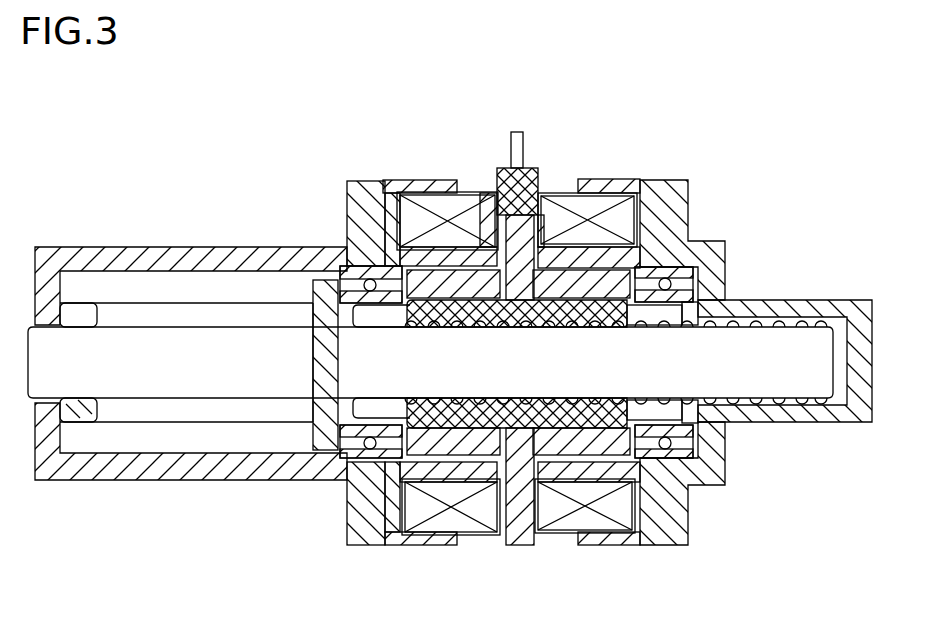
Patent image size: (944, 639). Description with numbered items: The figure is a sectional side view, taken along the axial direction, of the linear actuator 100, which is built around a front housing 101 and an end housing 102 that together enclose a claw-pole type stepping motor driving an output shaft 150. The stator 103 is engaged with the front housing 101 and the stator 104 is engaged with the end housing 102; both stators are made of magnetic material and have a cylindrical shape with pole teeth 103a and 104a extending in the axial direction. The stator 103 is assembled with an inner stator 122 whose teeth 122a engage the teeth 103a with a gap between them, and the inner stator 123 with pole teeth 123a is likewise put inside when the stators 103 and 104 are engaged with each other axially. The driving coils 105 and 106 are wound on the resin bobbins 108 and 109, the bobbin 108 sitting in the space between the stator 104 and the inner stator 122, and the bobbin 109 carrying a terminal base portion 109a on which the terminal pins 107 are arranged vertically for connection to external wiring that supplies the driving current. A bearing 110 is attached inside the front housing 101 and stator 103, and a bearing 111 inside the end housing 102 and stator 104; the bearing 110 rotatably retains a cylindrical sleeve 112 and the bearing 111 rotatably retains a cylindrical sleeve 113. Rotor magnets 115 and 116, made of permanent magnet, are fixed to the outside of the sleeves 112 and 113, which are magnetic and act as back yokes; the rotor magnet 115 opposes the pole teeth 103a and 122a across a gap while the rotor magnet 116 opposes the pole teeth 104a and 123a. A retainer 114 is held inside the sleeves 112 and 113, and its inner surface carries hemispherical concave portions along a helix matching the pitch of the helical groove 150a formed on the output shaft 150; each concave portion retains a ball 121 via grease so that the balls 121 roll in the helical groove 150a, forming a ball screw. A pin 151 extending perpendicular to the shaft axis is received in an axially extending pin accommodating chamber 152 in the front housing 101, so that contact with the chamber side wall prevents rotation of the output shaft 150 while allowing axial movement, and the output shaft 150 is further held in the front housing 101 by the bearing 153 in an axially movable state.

The linear actuator 100 is at (706, 152).
The front housing 101 is at (112, 256).
The end housing 102 is at (808, 302).
The stator 103 is at (402, 192).
The pole teeth 103a is at (425, 212).
The stator 104 is at (598, 180).
The pole teeth 104a is at (618, 199).
The driving coil 105 is at (493, 196).
The driving coil 106 is at (568, 193).
The terminal pin 107 is at (517, 138).
The bobbin 108 is at (348, 205).
The bobbin 109 is at (688, 200).
The terminal base portion 109a is at (540, 186).
The bearing 110 is at (352, 282).
The bearing 111 is at (700, 272).
The cylindrical sleeve 112 is at (438, 505).
The cylindrical sleeve 113 is at (585, 500).
The retainer 114 is at (650, 508).
The rotor magnet 115 is at (500, 480).
The rotor magnet 116 is at (562, 475).
The ball 121 is at (478, 200).
The inner stator 122 is at (512, 475).
The teeth 122a is at (490, 500).
The inner stator 123 is at (522, 470).
The pole teeth 123a is at (612, 490).
The output shaft 150 is at (182, 340).
The helical groove 150a is at (760, 400).
The pin 151 is at (322, 420).
The pin accommodating chamber 152 is at (155, 445).
The bearing 153 is at (82, 420).